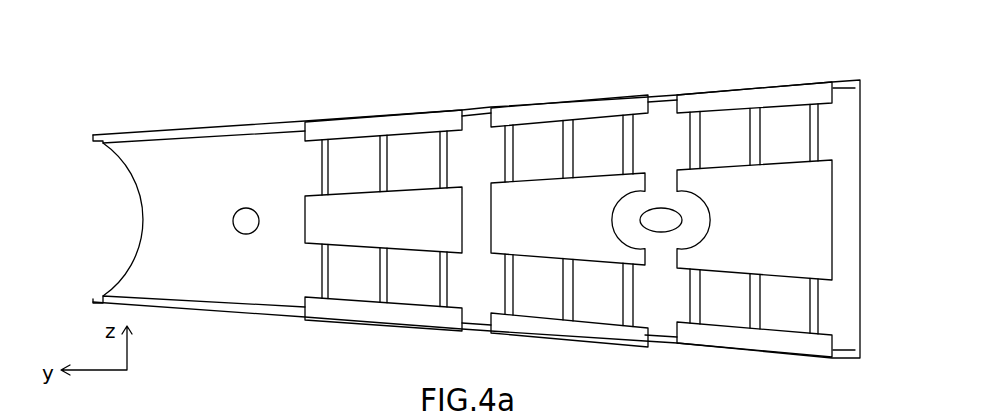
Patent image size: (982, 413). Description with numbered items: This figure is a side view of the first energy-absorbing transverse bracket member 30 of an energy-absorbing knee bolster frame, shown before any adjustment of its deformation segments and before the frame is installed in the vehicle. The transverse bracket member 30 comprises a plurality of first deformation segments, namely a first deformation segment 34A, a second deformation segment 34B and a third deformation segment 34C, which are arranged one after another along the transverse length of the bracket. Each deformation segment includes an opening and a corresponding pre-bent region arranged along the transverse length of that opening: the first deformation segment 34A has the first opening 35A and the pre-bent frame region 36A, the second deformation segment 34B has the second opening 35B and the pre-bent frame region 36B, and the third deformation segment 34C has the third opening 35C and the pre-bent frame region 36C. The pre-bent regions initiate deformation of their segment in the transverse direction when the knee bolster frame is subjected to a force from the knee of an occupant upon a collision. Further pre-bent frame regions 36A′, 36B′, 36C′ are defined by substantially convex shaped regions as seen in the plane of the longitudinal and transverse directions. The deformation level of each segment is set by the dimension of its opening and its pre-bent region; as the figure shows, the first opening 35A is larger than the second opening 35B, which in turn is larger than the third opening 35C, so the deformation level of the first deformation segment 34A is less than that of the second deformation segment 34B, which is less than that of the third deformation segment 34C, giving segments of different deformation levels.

The first energy-absorbing transverse bracket member 30 is at (213, 107).
The first deformation segment 34A is at (722, 138).
The second deformation segment 34B is at (540, 150).
The third deformation segment 34C is at (348, 157).
The first opening 35A is at (787, 197).
The second opening 35B is at (597, 195).
The third opening 35C is at (350, 223).
The pre-bent frame region 36A is at (752, 140).
The pre-bent frame region 36B is at (568, 155).
The pre-bent frame region 36C is at (387, 152).
The pre-bent frame region 36A′ is at (753, 77).
The pre-bent frame region 36B′ is at (566, 95).
The pre-bent frame region 36C′ is at (388, 110).